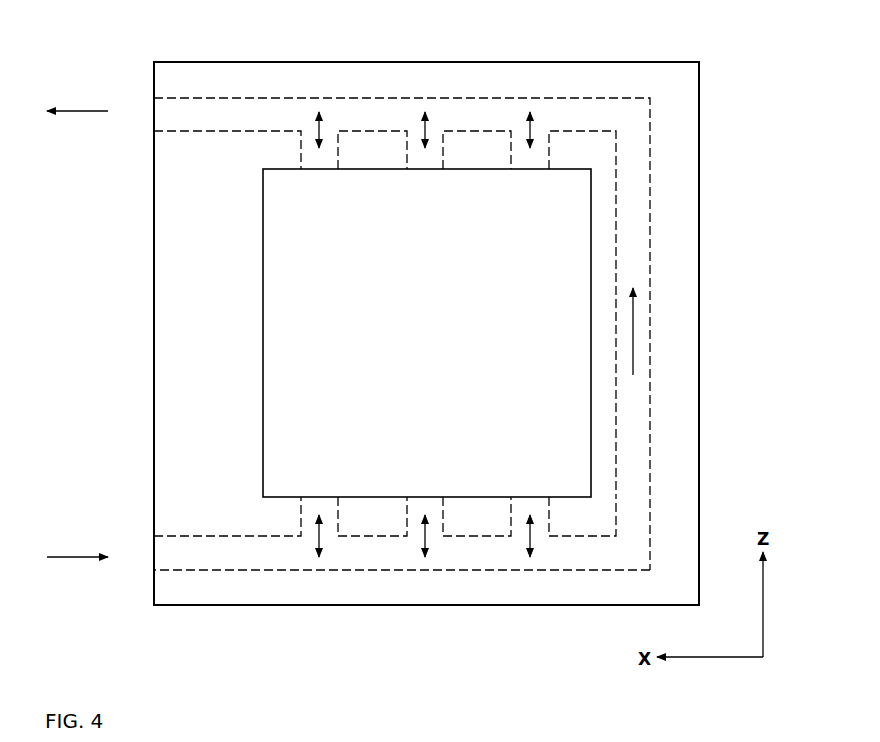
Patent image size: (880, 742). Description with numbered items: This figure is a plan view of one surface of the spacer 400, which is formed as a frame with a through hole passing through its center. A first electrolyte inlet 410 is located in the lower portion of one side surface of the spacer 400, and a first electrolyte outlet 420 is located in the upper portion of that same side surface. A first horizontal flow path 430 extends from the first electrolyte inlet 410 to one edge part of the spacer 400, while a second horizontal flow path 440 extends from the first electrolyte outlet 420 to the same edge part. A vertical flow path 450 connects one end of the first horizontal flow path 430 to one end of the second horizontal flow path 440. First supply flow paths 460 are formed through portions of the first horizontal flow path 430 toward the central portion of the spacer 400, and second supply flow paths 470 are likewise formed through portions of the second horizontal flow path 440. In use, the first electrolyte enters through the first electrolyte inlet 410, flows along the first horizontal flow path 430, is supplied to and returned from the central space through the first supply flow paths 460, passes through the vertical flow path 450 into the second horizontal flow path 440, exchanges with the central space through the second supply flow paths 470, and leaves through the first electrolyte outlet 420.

The spacer 400 is at (213, 30).
The first electrolyte inlet 410 is at (154, 557).
The first electrolyte outlet 420 is at (154, 117).
The first horizontal flow path 430 is at (372, 557).
The second horizontal flow path 440 is at (477, 113).
The vertical flow path 450 is at (637, 437).
The first supply flow paths 460 is at (425, 497).
The second supply flow paths 470 is at (425, 170).